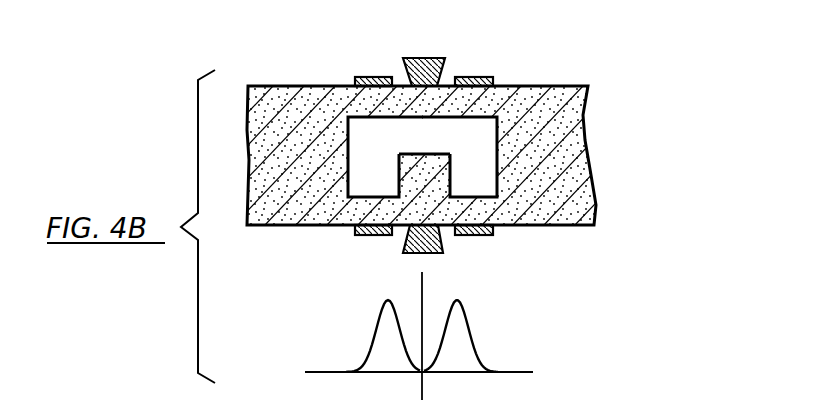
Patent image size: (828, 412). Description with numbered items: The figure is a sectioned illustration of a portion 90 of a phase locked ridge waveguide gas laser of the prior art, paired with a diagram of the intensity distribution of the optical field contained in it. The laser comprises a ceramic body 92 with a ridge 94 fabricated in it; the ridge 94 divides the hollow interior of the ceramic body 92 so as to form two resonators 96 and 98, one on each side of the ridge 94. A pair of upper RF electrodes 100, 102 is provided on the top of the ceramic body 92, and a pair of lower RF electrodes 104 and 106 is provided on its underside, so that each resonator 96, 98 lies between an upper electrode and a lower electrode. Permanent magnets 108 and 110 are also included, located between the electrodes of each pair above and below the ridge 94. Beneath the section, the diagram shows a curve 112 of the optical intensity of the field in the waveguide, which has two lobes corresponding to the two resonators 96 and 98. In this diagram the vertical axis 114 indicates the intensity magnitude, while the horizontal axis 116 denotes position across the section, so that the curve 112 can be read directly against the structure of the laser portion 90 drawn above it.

The portion of phase locked ridge waveguide gas laser 90 is at (408, 157).
The ceramic body 92 is at (593, 172).
The ridge 94 is at (425, 156).
The resonator 96 is at (385, 165).
The resonator 98 is at (485, 165).
The upper RF electrode 100 is at (361, 76).
The upper RF electrode 102 is at (486, 77).
The lower RF electrode 104 is at (353, 234).
The lower RF electrode 106 is at (491, 236).
The permanent magnet 108 is at (436, 60).
The permanent magnet 110 is at (405, 257).
The curve of the optical intensity 112 is at (472, 331).
The axis 114 is at (423, 290).
The axis 116 is at (528, 372).